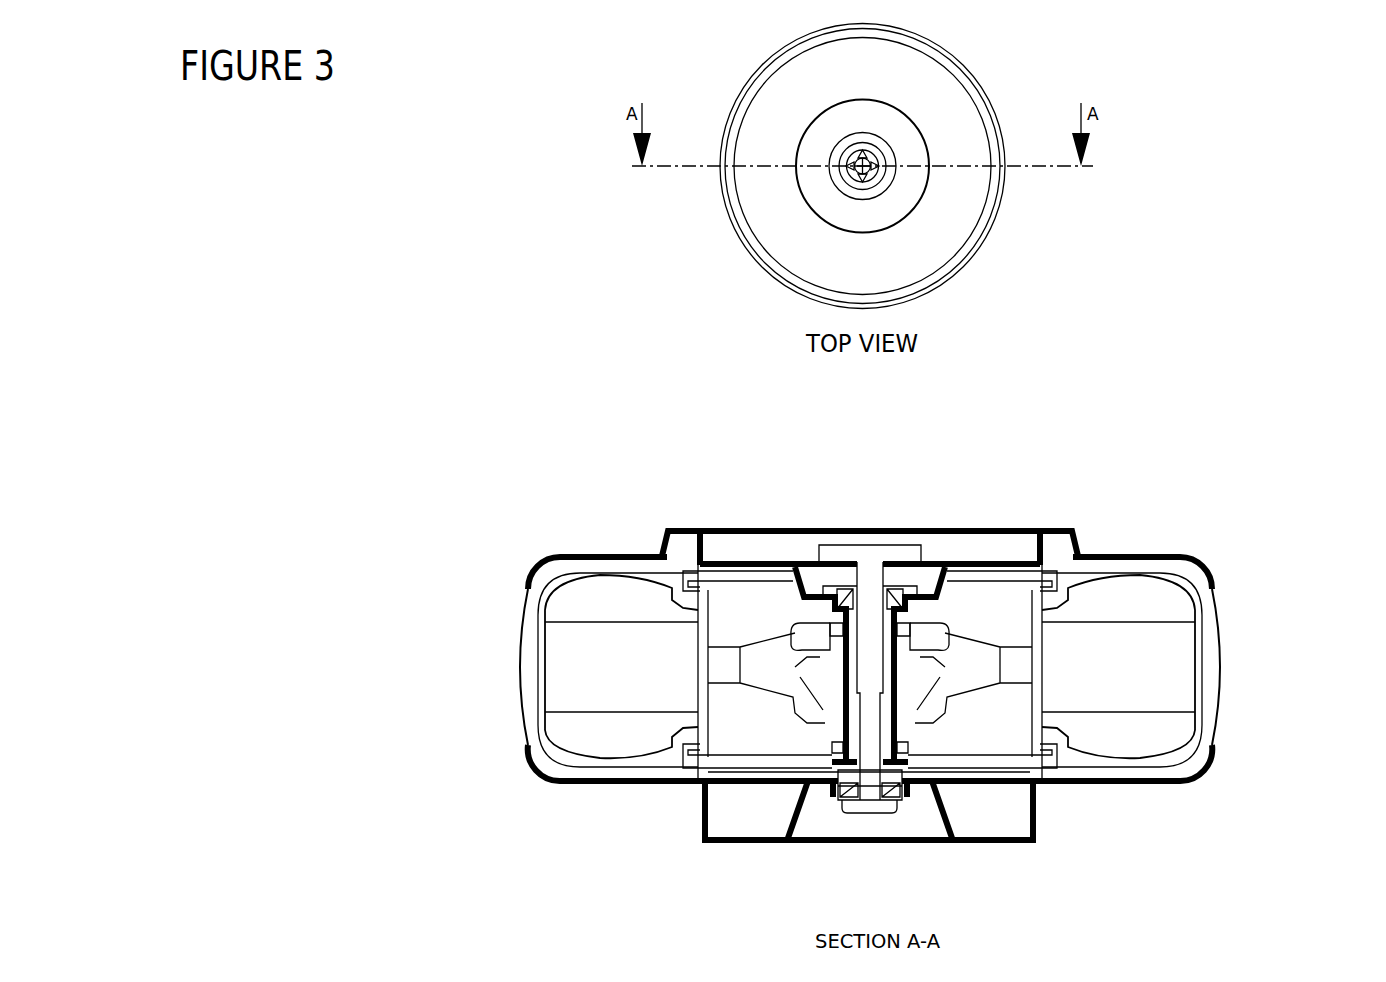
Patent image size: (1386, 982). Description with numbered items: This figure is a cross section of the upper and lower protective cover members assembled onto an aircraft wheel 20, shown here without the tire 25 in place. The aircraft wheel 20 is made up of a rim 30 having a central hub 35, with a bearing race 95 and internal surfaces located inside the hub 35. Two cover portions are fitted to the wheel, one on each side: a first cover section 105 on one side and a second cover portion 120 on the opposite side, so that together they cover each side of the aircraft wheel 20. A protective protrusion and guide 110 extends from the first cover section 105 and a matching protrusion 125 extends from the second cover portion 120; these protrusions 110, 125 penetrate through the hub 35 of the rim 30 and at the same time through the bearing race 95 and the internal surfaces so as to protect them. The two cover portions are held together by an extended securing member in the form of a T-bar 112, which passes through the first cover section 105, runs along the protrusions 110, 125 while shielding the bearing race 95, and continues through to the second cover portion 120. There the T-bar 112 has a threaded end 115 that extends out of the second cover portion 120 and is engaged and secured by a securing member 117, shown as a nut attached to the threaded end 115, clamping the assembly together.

The aircraft wheel 20 is at (490, 565).
The tire 25 is at (1222, 670).
The rim 30 is at (738, 592).
The hub 35 is at (818, 633).
The bearing race 95 is at (838, 628).
The first cover section 105 is at (1075, 534).
The protective protrusion and guide 110 is at (900, 650).
The T-bar 112 is at (870, 545).
The threaded end 115 is at (895, 813).
The securing member 117 is at (842, 805).
The second cover portion 120 is at (1037, 818).
The protrusion 125 is at (903, 700).